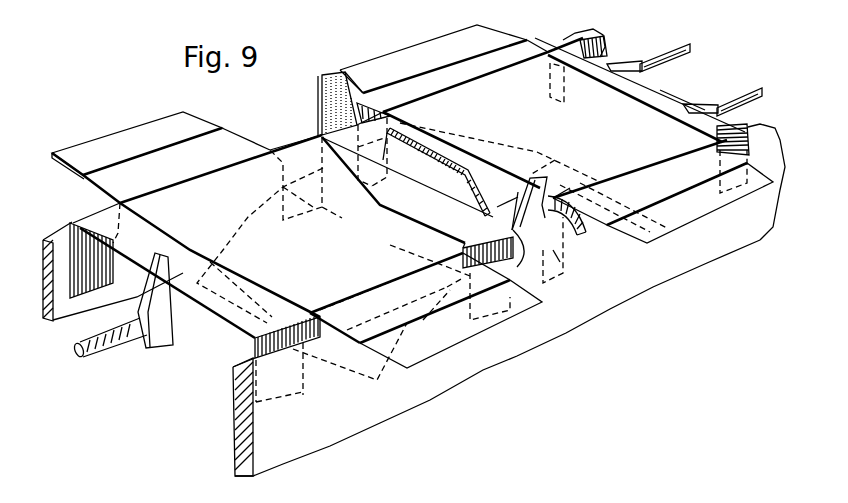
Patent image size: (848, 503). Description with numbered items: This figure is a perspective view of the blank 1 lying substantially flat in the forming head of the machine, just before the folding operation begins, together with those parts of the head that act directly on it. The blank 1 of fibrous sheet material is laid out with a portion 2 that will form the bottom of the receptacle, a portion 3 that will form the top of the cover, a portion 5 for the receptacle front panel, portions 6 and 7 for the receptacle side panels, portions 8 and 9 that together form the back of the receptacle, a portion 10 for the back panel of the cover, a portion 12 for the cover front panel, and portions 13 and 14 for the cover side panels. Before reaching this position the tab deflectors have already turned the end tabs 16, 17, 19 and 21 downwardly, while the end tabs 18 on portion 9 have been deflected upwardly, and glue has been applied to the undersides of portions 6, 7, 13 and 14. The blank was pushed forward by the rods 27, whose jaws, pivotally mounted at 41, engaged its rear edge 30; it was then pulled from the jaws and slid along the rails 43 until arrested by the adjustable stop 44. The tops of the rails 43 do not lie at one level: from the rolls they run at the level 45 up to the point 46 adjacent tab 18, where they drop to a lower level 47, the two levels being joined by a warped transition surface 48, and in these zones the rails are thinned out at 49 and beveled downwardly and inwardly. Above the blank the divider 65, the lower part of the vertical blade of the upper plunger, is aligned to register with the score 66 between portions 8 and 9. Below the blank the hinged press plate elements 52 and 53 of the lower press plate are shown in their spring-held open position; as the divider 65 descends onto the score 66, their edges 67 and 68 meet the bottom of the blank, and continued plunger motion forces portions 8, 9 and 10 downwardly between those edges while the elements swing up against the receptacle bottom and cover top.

The blank 1 is at (257, 143).
The bottom portion 2 is at (258, 227).
The cover top portion 3 is at (552, 121).
The receptacle front panel portion 5 is at (154, 270).
The receptacle side panel portion 6 is at (297, 240).
The receptacle side panel portion 7 is at (315, 235).
The receptacle back portion 8 is at (403, 175).
The receptacle back portion 9 is at (497, 207).
The cover back panel portion 10 is at (518, 192).
The cover front panel portion 12 is at (640, 85).
The cover side panel portion 13 is at (556, 134).
The cover side panel portion 14 is at (555, 135).
The end tabs 16 is at (100, 290).
The end tabs 17 is at (311, 134).
The end tabs 18 is at (322, 95).
The end tabs 19 is at (371, 178).
The end tabs 21 is at (549, 101).
The rods 27 is at (664, 50).
The rear edge 30 is at (694, 89).
The pivotal mounting 41 is at (642, 67).
The rails 43 is at (50, 306).
The adjustable stop 44 is at (163, 330).
The rail upper level 45 is at (592, 37).
The point 46 is at (585, 227).
The lower level 47 is at (66, 235).
The transition surface 48 is at (558, 262).
The thinned portion 49 is at (512, 265).
The press plate element 52 is at (248, 216).
The press plate element 53 is at (590, 186).
The divider 65 is at (408, 172).
The score 66 is at (500, 232).
The edge 67 is at (390, 245).
The edge 68 is at (554, 160).